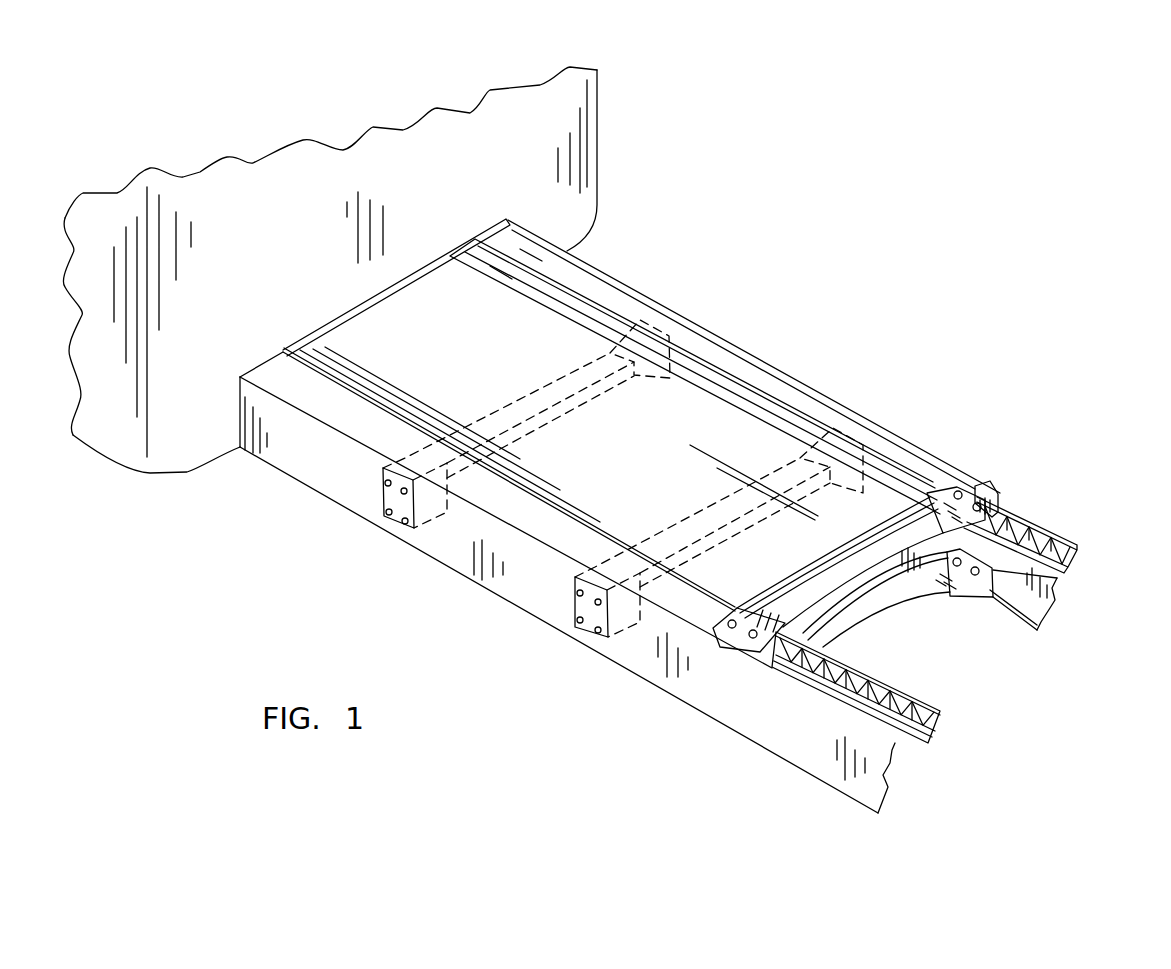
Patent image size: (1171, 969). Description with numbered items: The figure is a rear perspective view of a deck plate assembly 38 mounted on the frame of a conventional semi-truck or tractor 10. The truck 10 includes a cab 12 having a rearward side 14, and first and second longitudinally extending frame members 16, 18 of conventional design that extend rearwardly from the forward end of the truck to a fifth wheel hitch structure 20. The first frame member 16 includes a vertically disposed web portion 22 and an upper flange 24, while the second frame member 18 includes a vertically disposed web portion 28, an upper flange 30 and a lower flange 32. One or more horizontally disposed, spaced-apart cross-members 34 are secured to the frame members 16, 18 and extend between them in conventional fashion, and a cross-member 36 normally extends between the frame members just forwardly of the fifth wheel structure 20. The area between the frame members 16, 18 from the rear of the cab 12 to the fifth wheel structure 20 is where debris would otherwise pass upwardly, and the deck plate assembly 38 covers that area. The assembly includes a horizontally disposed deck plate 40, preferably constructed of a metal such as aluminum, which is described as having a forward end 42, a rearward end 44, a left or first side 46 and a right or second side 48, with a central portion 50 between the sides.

The semi-truck 10 is at (270, 100).
The cab 12 is at (594, 72).
The rearward side 14 is at (300, 237).
The first frame member 16 is at (533, 602).
The second frame member 18 is at (1062, 594).
The fifth wheel hitch structure 20 is at (1020, 535).
The web portion 22 is at (758, 722).
The upper flange 24 is at (520, 528).
The web portion 28 is at (1010, 570).
The upper flange 30 is at (910, 460).
The lower flange 32 is at (1053, 593).
The cross-members 34 is at (650, 307).
The cross-member 36 is at (887, 600).
The deck plate assembly 38 is at (553, 322).
The deck plate 40 is at (397, 408).
The forward end 42 is at (442, 256).
The rearward end 44 is at (878, 528).
The first side 46 is at (567, 505).
The second side 48 is at (752, 400).
The central portion 50 is at (440, 346).